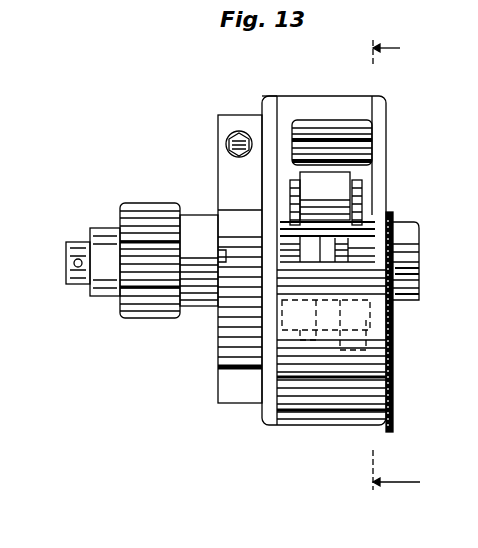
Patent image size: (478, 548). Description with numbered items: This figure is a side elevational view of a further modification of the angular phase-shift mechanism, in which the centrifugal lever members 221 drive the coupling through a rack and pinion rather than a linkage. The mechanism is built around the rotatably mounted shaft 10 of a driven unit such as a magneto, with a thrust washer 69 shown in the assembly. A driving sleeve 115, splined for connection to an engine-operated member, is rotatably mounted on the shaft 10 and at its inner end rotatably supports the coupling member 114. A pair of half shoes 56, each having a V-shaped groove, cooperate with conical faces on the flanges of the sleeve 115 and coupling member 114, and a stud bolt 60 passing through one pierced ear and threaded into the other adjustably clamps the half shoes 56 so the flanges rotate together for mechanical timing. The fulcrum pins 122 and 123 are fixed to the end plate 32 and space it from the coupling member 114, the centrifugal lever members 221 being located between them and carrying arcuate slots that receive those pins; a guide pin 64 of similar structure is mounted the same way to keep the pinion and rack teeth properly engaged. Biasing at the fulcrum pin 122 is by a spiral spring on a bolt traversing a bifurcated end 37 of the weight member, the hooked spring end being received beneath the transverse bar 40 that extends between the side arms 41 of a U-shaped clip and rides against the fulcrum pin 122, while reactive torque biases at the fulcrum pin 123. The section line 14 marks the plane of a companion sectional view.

The shaft 10 is at (400, 222).
The section line 14 is at (395, 269).
The end plate 32 is at (386, 104).
The end of centrifugal weight member 37 is at (362, 196).
The transverse bar 40 is at (356, 182).
The side arms 41 is at (277, 208).
The half shoes 56 is at (222, 160).
The stud bolt 60 is at (225, 132).
The guide pin 64 is at (414, 282).
The thrust washer 69 is at (395, 258).
The coupling member 114 is at (266, 96).
The sleeve 115 is at (188, 215).
The fulcrum pin 122 is at (348, 150).
The fulcrum pin 123 is at (396, 357).
The centrifugal lever members 221 is at (306, 97).